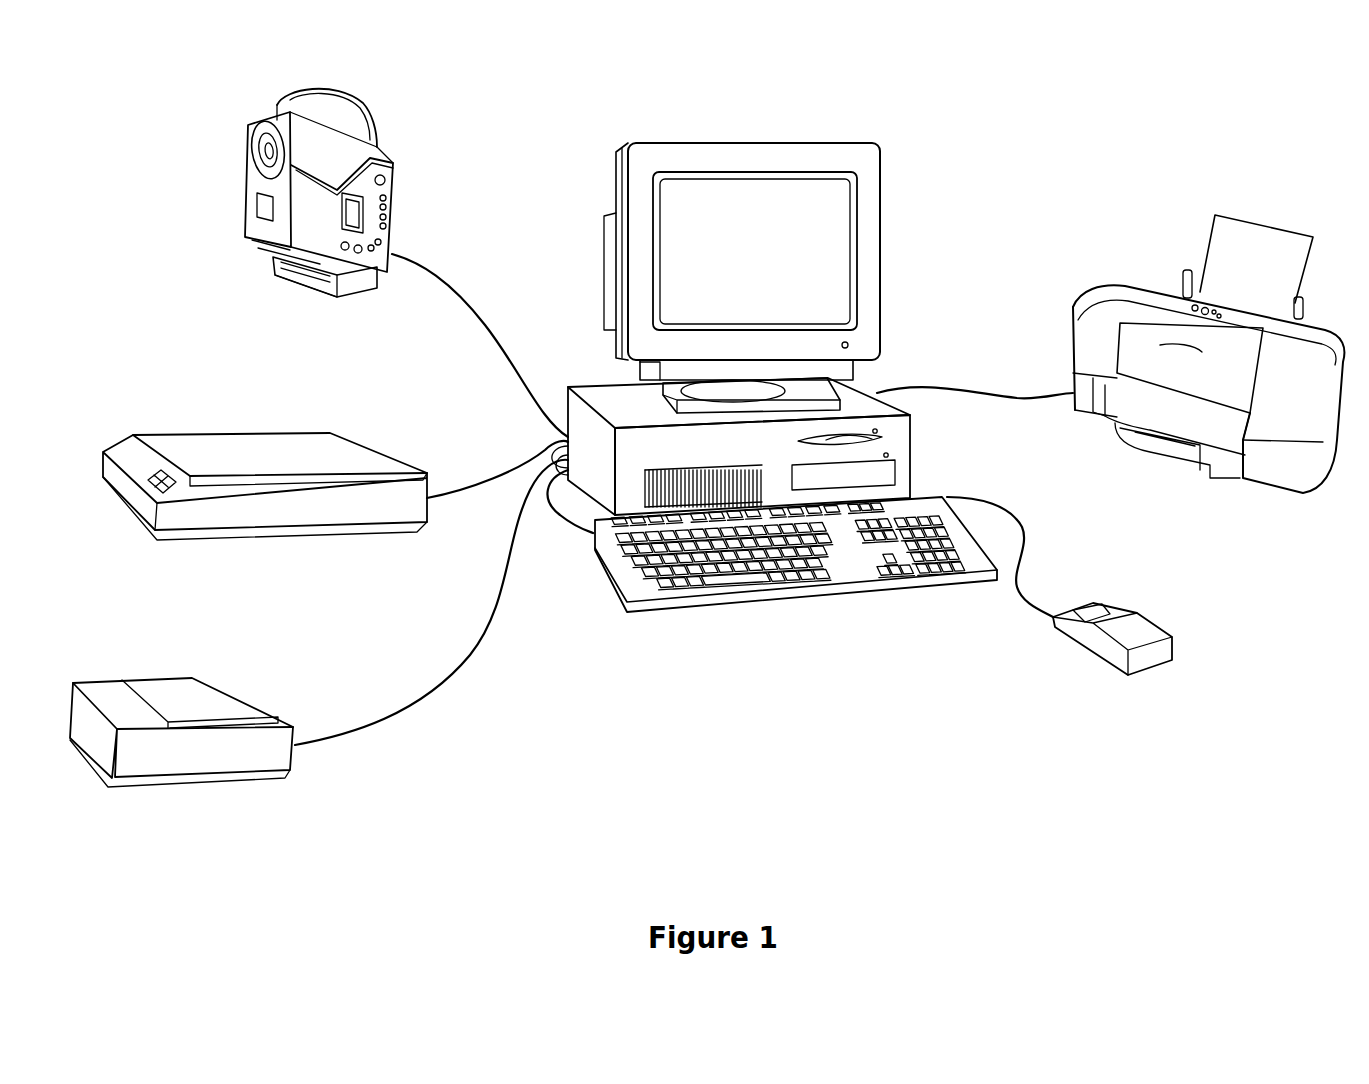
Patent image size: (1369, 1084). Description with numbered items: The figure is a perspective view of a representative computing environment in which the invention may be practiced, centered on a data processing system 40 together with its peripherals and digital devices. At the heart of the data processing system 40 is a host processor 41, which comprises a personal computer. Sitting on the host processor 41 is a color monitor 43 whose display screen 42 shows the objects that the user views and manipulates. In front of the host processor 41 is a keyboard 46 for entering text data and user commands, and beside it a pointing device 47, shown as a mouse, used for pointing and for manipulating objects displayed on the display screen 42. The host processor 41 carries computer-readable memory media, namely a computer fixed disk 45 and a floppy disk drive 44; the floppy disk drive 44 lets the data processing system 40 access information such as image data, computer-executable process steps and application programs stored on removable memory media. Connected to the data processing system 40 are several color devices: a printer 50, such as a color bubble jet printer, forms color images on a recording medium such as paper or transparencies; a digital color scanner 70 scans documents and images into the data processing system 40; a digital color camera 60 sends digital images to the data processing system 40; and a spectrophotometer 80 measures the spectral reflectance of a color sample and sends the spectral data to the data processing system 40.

The data processing system 40 is at (923, 135).
The host processor 41 is at (581, 384).
The display screen 42 is at (835, 274).
The color monitor 43 is at (719, 142).
The floppy disk drive 44 is at (826, 438).
The computer fixed disk 45 is at (888, 470).
The keyboard 46 is at (690, 587).
The pointing device 47 is at (1153, 667).
The printer 50 is at (1097, 250).
The digital color camera 60 is at (393, 163).
The digital color scanner 70 is at (317, 533).
The spectrophotometer 80 is at (180, 787).